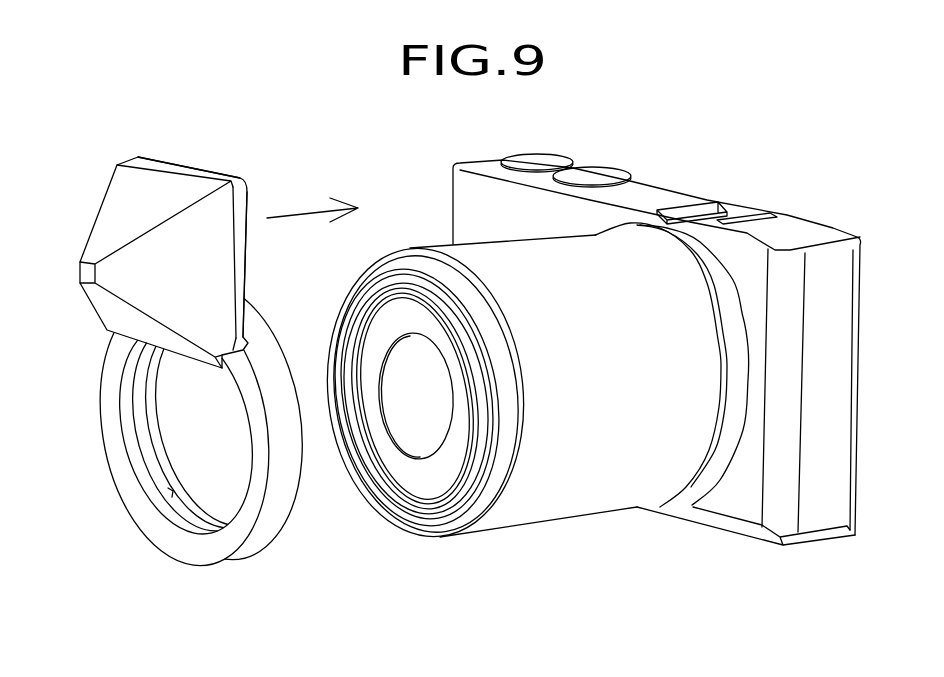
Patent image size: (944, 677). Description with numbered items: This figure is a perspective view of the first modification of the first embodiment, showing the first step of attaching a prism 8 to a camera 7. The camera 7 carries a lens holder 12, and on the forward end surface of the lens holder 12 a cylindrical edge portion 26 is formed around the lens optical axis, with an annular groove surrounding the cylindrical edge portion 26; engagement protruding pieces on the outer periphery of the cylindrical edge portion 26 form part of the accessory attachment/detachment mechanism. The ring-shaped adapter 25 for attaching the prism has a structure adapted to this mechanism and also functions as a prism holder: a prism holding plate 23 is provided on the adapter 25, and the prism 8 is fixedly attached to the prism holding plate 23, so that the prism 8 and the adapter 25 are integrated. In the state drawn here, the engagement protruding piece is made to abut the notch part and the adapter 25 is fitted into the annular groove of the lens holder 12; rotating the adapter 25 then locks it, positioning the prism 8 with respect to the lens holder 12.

The camera 7 is at (668, 188).
The prism 8 is at (105, 197).
The lens holder 12 is at (559, 522).
The prism holding plate 23 is at (250, 205).
The adapter for attaching the prism 25 is at (270, 543).
The cylindrical edge portion 26 is at (333, 317).